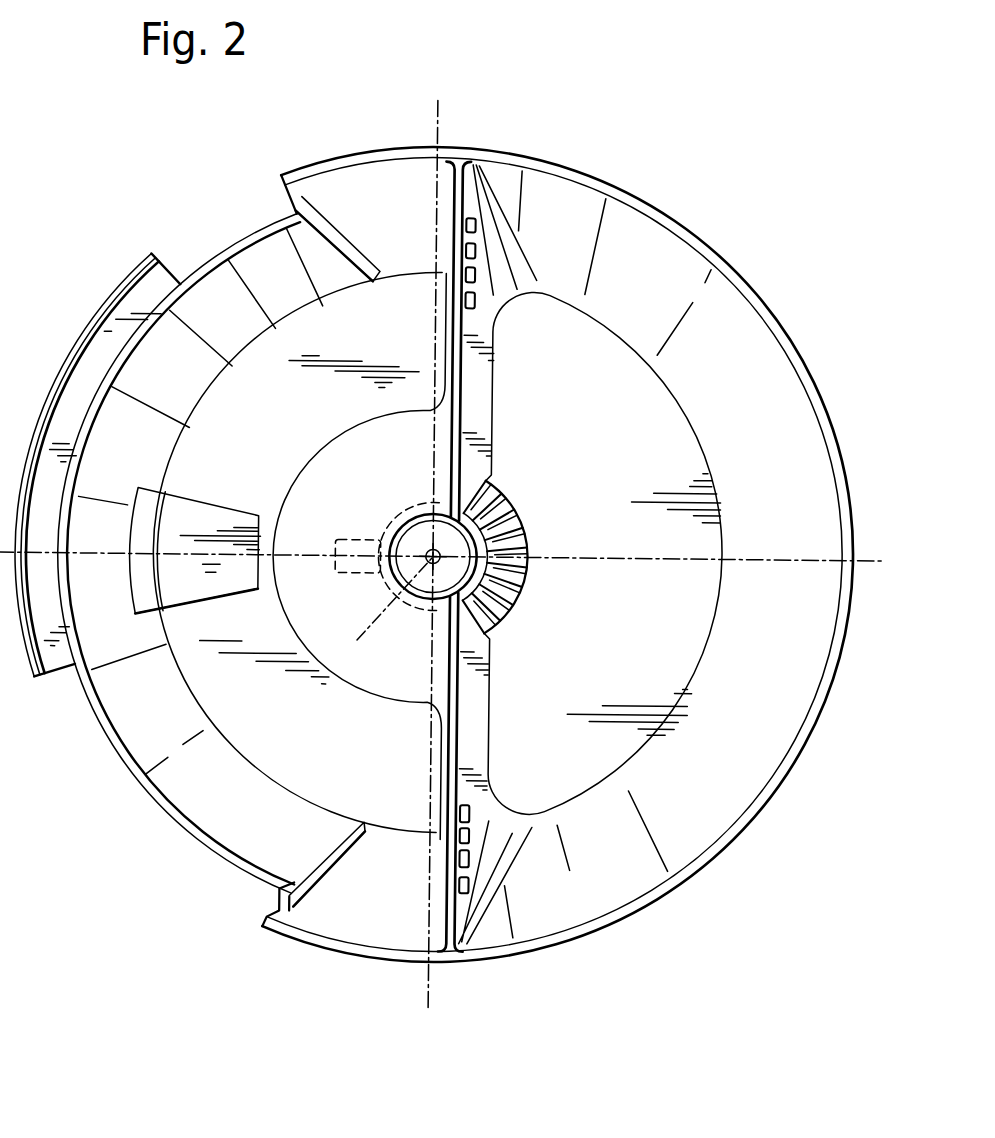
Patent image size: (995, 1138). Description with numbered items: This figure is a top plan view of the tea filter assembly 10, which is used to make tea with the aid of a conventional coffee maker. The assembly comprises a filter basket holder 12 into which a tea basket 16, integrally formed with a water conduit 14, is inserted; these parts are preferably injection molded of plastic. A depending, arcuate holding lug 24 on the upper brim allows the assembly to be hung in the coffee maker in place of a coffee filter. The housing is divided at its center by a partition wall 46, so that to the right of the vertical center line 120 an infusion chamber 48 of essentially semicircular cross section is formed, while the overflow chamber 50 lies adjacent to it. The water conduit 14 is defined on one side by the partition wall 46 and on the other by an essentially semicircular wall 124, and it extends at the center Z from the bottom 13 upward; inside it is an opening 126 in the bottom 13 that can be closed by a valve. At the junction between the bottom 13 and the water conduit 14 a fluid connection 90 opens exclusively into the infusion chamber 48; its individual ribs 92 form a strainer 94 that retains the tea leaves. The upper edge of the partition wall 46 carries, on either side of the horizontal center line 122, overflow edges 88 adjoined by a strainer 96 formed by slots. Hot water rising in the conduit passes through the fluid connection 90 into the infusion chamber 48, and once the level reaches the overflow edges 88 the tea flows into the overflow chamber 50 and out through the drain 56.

The tea filter assembly 10 is at (712, 190).
The filter basket holder 12 is at (690, 828).
The tea basket 16 is at (177, 552).
The bottom 13 is at (310, 748).
The water conduit 14 is at (416, 622).
The holding lug 24 is at (88, 367).
The partition wall 46 is at (468, 377).
The infusion chamber 48 is at (648, 441).
The overflow chamber 50 is at (279, 410).
The drain 56 is at (363, 567).
The overflow edges 88 is at (478, 251).
The fluid connection 90 is at (500, 512).
The ribs 92 is at (518, 543).
The strainer 94 is at (530, 607).
The strainer 96 is at (480, 298).
The vertical center line 120 is at (424, 994).
The horizontal center line 122 is at (765, 560).
The semicircular wall 124 is at (387, 531).
The opening 126 is at (427, 548).
The center Z is at (432, 558).